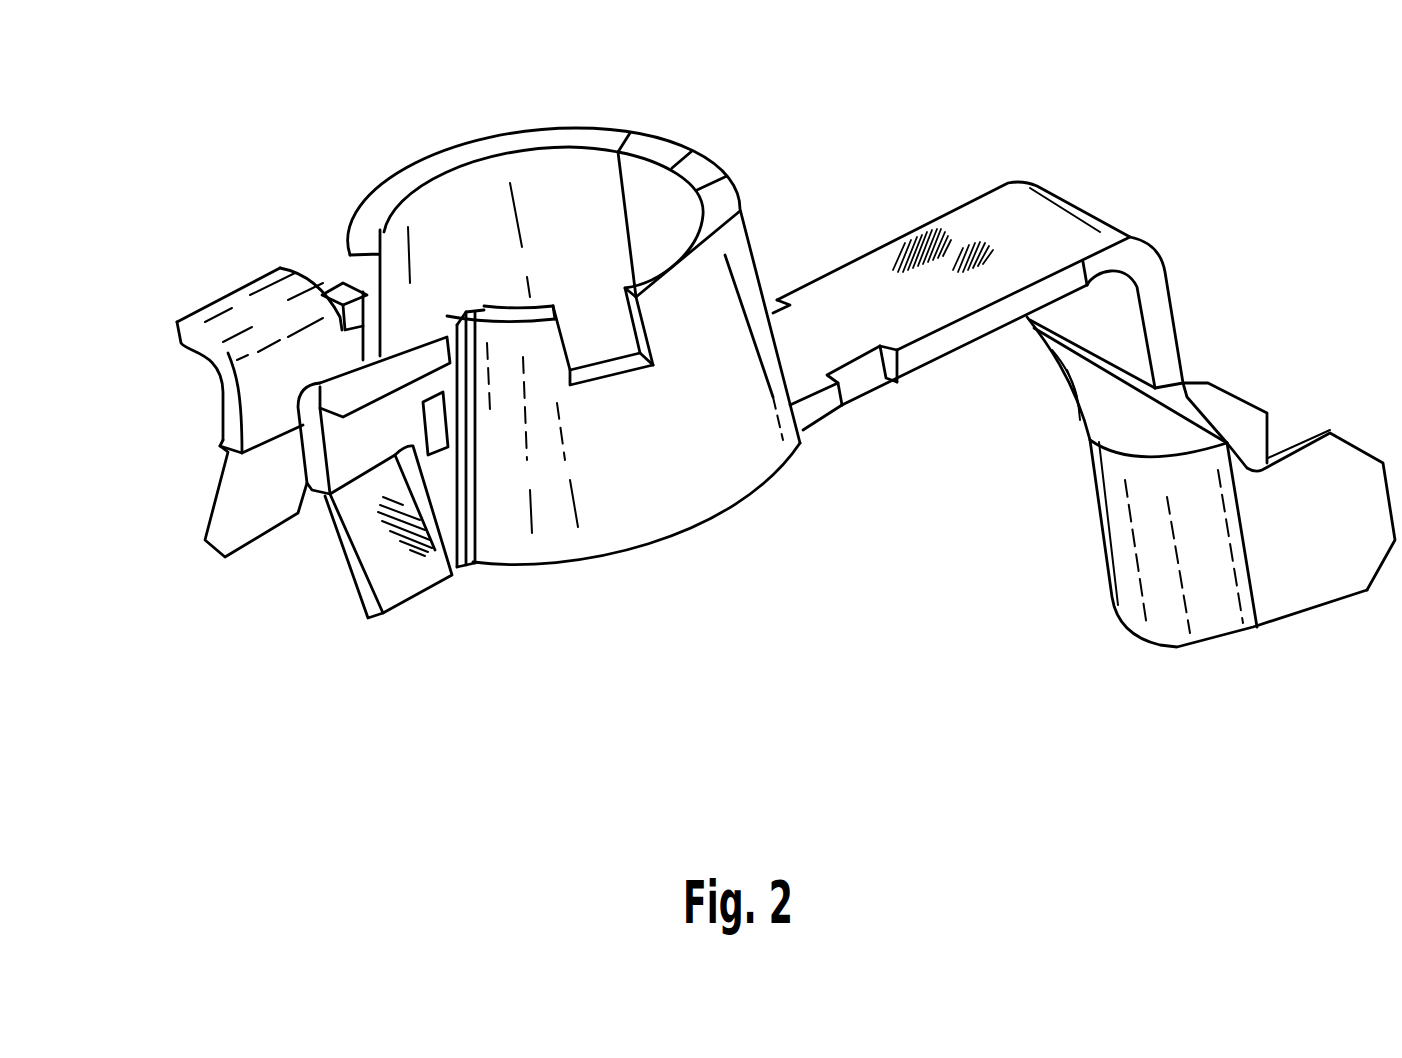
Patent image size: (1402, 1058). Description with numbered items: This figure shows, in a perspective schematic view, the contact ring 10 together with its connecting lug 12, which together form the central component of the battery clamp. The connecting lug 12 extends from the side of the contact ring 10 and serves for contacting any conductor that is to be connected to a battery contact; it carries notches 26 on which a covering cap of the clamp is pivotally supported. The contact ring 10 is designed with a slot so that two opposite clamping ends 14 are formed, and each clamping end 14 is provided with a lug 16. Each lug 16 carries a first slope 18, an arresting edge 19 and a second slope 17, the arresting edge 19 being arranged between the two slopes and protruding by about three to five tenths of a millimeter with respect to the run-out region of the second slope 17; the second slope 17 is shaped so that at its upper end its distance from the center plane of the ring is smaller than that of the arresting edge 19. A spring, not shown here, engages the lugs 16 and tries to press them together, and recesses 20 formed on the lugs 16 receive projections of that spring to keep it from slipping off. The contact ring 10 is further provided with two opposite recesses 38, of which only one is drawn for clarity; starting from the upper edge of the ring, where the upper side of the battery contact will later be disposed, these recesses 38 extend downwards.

The contact ring 10 is at (702, 493).
The connecting lug 12 is at (1293, 593).
The clamping ends 14 is at (433, 310).
The lug 16 is at (280, 360).
The second slope 17 is at (243, 387).
The first slope 18 is at (252, 513).
The arresting edge 19 is at (262, 443).
The recesses 20 is at (440, 420).
The notches 26 is at (863, 373).
The recesses 38 is at (633, 327).